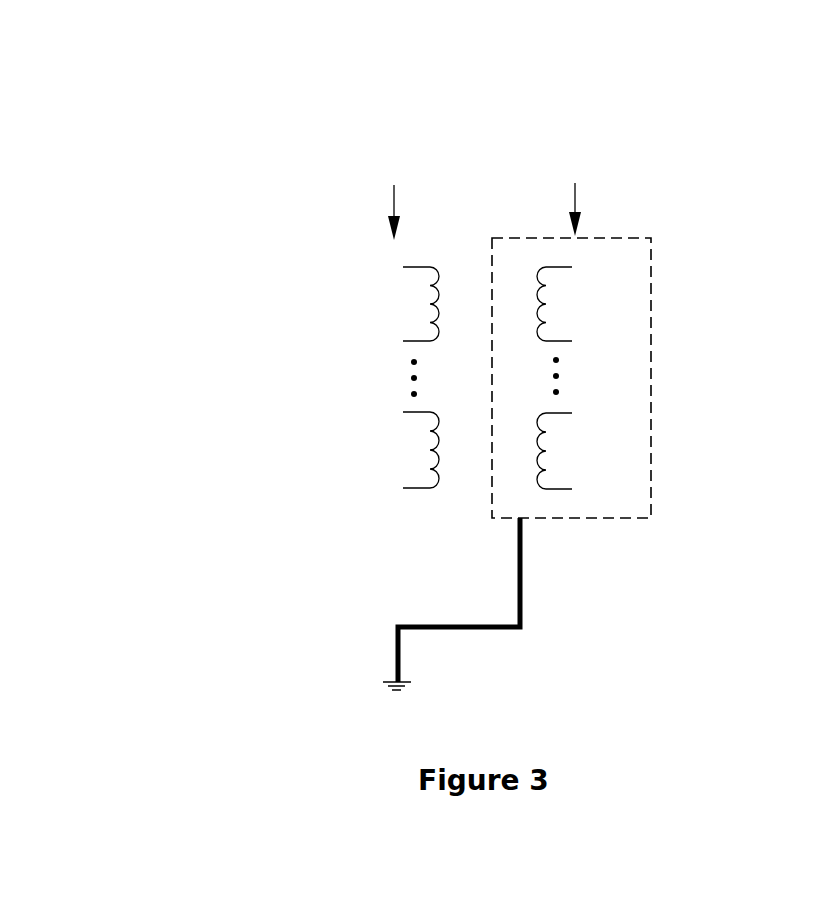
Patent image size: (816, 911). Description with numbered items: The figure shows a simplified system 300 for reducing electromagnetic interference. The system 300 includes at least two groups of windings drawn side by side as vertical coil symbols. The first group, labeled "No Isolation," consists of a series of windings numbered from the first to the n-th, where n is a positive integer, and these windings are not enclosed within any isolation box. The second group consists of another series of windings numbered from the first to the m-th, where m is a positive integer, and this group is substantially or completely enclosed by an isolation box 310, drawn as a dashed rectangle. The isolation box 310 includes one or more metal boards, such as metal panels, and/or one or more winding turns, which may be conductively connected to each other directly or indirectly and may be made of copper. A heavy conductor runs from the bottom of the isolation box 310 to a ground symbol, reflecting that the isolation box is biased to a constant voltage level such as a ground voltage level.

The system 300 is at (76, 88).
The isolation box 310 is at (652, 351).